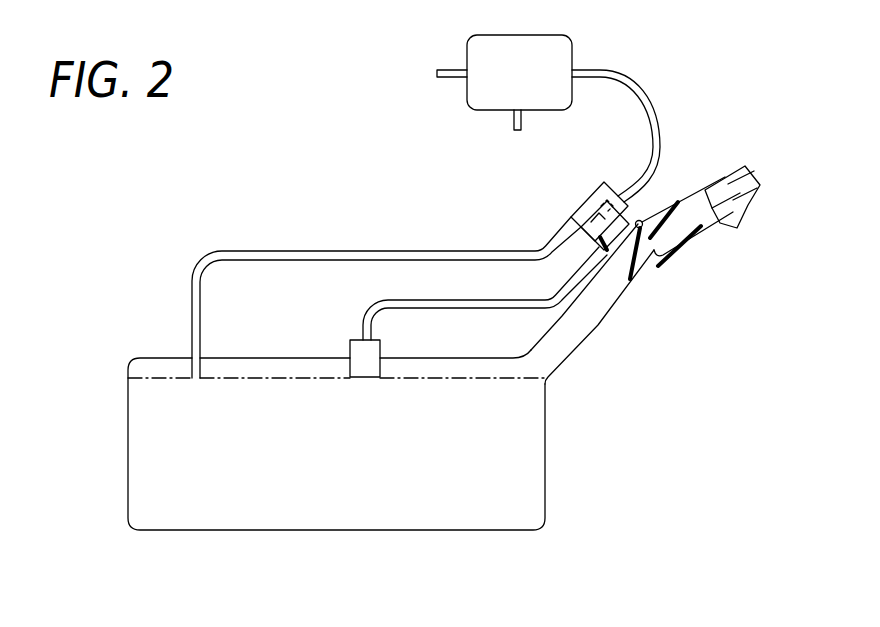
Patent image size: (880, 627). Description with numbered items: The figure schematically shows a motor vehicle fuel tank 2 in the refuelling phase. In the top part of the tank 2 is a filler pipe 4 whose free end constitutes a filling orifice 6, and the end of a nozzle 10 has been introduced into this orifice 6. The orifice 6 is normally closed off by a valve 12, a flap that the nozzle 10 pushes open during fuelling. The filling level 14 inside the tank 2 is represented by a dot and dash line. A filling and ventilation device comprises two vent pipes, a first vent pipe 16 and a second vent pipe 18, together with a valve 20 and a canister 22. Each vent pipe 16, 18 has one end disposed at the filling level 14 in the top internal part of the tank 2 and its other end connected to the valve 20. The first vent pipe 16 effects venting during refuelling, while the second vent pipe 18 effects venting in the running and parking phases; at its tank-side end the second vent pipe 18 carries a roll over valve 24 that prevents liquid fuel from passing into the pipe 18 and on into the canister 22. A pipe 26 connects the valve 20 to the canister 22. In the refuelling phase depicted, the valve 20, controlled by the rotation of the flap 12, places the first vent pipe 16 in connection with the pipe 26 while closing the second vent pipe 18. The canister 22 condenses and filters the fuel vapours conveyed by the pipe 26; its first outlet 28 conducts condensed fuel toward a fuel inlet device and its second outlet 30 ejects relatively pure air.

The fuel tank 2 is at (128, 470).
The filler pipe 4 is at (577, 323).
The filling orifice 6 is at (667, 249).
The nozzle 10 is at (728, 183).
The valve 12 is at (631, 278).
The filling level 14 is at (150, 390).
The first vent pipe 16 is at (422, 253).
The second vent pipe 18 is at (428, 312).
The valve 20 is at (604, 182).
The canister 22 is at (512, 50).
The roll over valve 24 is at (370, 370).
The pipe 26 is at (623, 83).
The first outlet 28 is at (517, 128).
The second outlet 30 is at (441, 71).